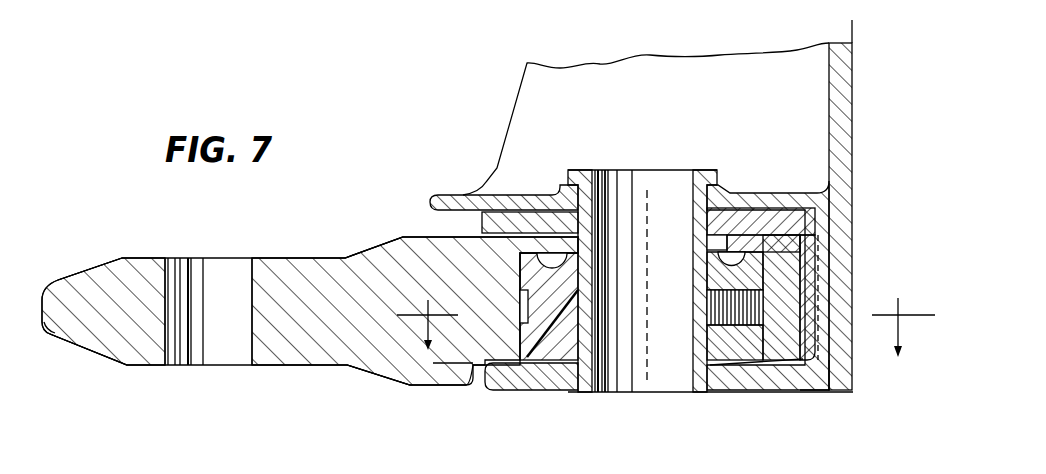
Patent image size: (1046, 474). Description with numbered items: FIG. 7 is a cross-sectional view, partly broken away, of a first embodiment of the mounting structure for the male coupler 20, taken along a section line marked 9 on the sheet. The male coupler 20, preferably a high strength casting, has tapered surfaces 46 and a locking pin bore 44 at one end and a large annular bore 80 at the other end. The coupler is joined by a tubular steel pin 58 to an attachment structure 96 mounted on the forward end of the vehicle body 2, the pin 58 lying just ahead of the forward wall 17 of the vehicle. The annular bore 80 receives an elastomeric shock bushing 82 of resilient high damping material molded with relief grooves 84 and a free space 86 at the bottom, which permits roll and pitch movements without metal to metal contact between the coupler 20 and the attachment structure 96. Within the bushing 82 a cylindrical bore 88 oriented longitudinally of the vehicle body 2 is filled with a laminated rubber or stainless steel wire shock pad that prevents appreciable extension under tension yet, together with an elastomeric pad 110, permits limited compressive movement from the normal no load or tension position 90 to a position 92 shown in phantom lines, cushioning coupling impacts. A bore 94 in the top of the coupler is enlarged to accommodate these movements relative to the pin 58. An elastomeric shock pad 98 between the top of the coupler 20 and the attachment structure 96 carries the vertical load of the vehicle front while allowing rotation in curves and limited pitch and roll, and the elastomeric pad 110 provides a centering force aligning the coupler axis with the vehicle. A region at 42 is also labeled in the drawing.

The vehicle body 2 is at (839, 30).
The section line 9- 9 is at (666, 341).
The forward wall 17 is at (850, 116).
The male coupler 20 is at (266, 249).
The recess 42 is at (548, 277).
The locking pin bore 44 is at (253, 330).
The tapered surfaces 46 is at (98, 265).
The pin 58 is at (697, 170).
The annular bore 80 is at (520, 308).
The elastomeric shock bushing 82 is at (557, 358).
The relief grooves 84 is at (528, 312).
The free space 86 is at (530, 364).
The cylindrical bore 88 is at (738, 320).
The normal no load or tension load position 90 is at (798, 360).
The compressed position 92 is at (835, 355).
The bore 94 is at (715, 245).
The attachment structure 96 is at (845, 183).
The elastomeric shock pad 98 is at (478, 223).
The elastomeric pad 110 is at (822, 292).